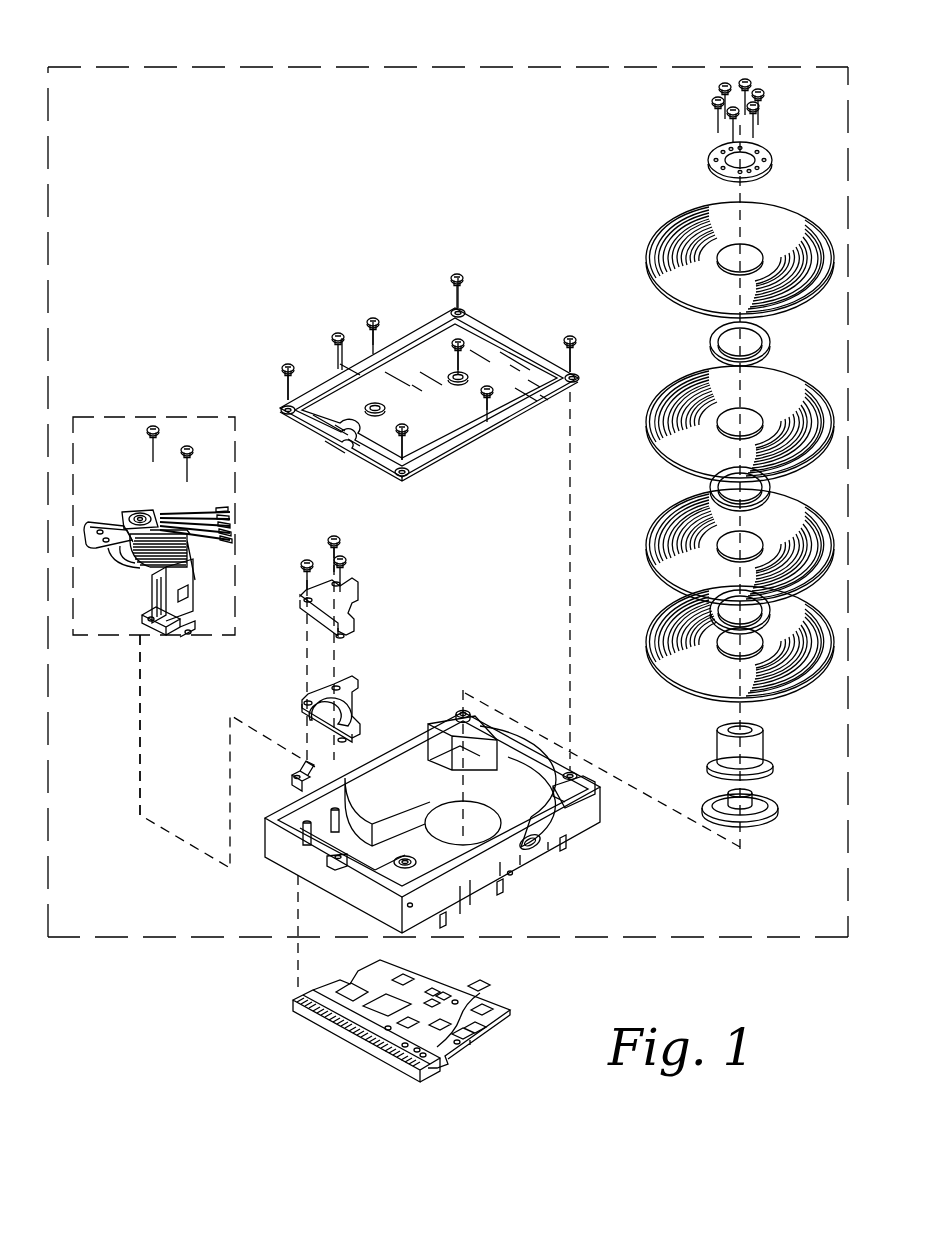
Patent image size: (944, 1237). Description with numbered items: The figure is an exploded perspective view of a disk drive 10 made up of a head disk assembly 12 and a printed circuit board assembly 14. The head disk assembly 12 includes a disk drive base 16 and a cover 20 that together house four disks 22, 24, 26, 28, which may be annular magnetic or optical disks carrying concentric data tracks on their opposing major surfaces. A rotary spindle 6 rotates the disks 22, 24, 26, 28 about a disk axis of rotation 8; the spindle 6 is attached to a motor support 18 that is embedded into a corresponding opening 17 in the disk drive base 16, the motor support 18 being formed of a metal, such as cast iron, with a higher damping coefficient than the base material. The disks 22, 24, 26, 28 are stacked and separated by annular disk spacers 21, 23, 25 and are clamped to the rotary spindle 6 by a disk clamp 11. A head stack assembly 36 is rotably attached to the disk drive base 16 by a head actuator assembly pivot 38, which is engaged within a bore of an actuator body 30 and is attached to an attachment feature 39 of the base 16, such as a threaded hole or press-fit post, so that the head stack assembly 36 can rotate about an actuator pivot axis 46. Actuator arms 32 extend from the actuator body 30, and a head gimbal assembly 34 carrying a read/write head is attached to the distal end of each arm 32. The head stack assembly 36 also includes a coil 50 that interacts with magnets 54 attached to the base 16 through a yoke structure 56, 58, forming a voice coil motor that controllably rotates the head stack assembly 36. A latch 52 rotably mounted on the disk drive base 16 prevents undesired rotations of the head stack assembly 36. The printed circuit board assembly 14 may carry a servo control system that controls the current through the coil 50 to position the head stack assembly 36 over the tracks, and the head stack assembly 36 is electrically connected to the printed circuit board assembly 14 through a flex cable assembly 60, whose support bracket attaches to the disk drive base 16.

The disk drive 10 is at (198, 50).
The head disk assembly 12 is at (165, 938).
The disk axis of rotation 8 is at (746, 188).
The disk clamp 11 is at (713, 159).
The disk 22 is at (684, 223).
The annular disk spacer 21 is at (770, 342).
The disk 24 is at (682, 395).
The annular disk spacer 23 is at (770, 487).
The disk 26 is at (682, 515).
The annular disk spacer 25 is at (726, 627).
The disk 28 is at (666, 619).
The rotary spindle 6 is at (767, 745).
The motor support 18 is at (766, 800).
The cover 20 is at (514, 400).
The disk drive base 16 is at (525, 862).
The opening 17 is at (487, 826).
The attachment feature 39 is at (396, 863).
The latch 52 is at (292, 766).
The yoke structure 56 is at (340, 611).
The yoke structure 58 is at (344, 690).
The magnet 54 is at (348, 722).
The head stack assembly 36 is at (184, 416).
The head actuator assembly pivot 38 is at (140, 510).
The actuator arm 32 is at (167, 514).
The head gimbal assembly 34 is at (228, 520).
The actuator body 30 is at (128, 512).
The coil 50 is at (124, 548).
The flex cable assembly 60 is at (182, 610).
The actuator pivot axis 46 is at (140, 760).
The printed circuit board assembly 14 is at (494, 1020).